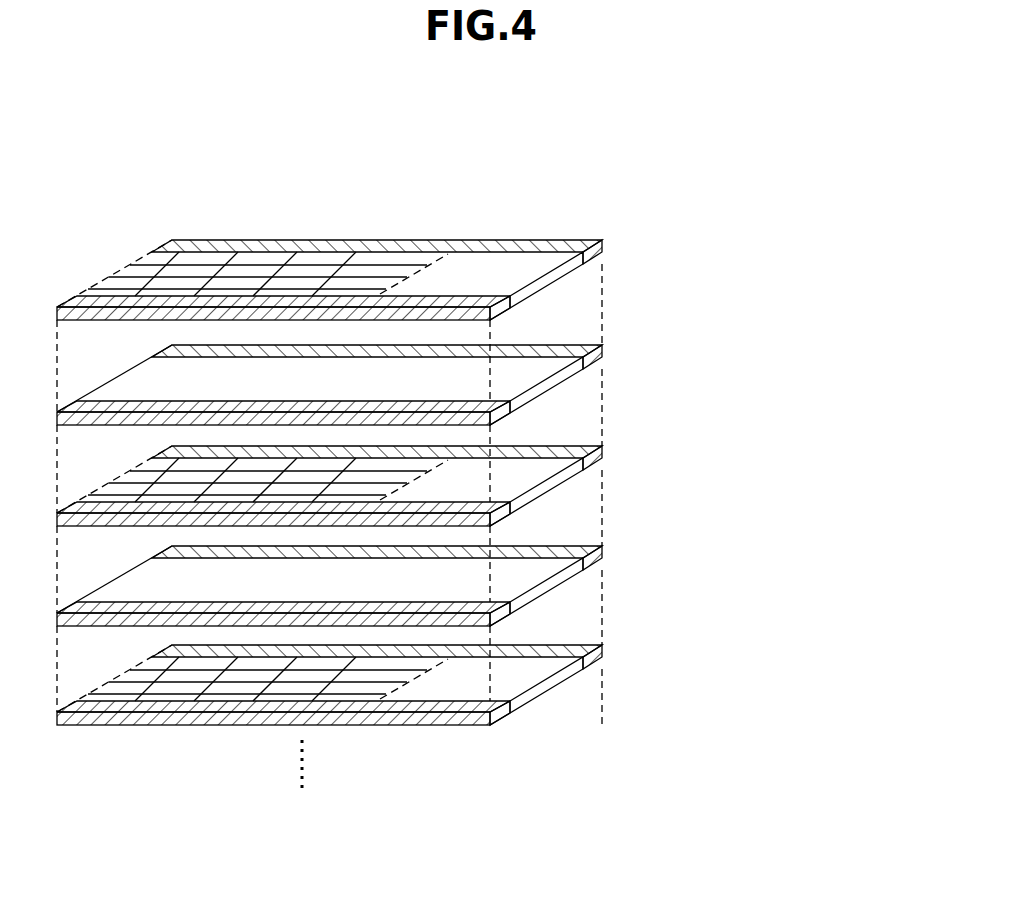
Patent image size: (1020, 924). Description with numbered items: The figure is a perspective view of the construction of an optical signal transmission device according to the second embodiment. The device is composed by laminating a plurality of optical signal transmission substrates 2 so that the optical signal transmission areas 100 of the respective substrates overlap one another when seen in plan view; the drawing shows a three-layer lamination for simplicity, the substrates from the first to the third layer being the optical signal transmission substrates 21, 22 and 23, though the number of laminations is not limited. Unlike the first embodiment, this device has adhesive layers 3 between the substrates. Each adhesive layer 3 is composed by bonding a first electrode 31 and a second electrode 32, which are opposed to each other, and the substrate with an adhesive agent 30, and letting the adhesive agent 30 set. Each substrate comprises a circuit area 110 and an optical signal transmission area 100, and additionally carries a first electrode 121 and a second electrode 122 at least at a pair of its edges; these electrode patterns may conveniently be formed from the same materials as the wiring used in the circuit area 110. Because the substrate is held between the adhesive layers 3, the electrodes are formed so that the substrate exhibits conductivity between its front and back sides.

The optical signal transmission area 100 is at (352, 262).
The circuit area 110 is at (470, 282).
The first electrode 121 is at (603, 247).
The optical signal transmission substrate 21 is at (467, 237).
The second electrode 122 is at (513, 309).
The first electrode 31 is at (414, 360).
The adhesive agent 30 is at (365, 385).
The adhesive layer 3 is at (463, 485).
The second electrode 32 is at (360, 427).
The optical signal transmission substrate 22 is at (626, 492).
The optical signal transmission substrate 23 is at (626, 690).
The optical signal transmission substrates 2 is at (477, 509).